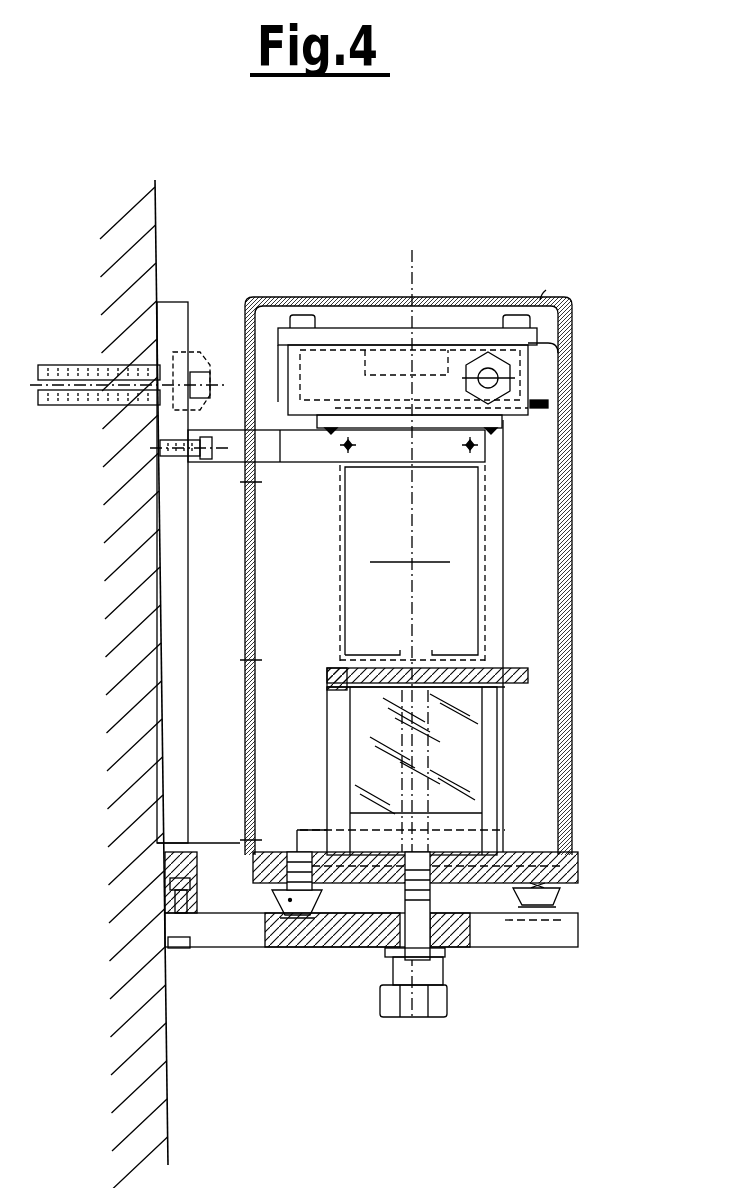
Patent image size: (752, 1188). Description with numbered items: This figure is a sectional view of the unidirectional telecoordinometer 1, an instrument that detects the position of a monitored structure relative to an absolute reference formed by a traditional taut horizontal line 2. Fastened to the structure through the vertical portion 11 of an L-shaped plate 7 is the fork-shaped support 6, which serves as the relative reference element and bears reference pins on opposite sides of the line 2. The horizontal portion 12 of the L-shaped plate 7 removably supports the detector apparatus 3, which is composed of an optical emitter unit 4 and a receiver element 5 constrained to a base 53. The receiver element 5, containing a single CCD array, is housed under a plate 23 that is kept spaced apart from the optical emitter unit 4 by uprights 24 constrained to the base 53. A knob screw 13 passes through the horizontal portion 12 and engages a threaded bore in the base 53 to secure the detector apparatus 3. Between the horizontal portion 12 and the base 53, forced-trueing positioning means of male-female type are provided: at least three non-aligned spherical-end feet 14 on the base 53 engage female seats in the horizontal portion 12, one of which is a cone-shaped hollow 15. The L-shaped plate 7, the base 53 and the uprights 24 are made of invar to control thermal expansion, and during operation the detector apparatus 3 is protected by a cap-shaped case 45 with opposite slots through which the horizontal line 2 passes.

The unidirectional telecoordinometer 1 is at (602, 153).
The taut horizontal line 2 is at (412, 562).
The detector apparatus 3 is at (555, 318).
The optical emitter unit 4 is at (495, 746).
The receiver element 5 is at (427, 357).
The fork-shaped support 6 is at (478, 435).
The L-shaped plate 7 is at (212, 953).
The vertical portion 11 is at (170, 318).
The horizontal portion 12 is at (510, 935).
The knob screw 13 is at (395, 1003).
The spherical-end feet 14 is at (290, 950).
The cone-shaped hollow 15 is at (300, 922).
The plate 23 is at (372, 338).
The uprights 24 is at (538, 558).
The cap-shaped case 45 is at (540, 300).
The base 53 is at (352, 876).